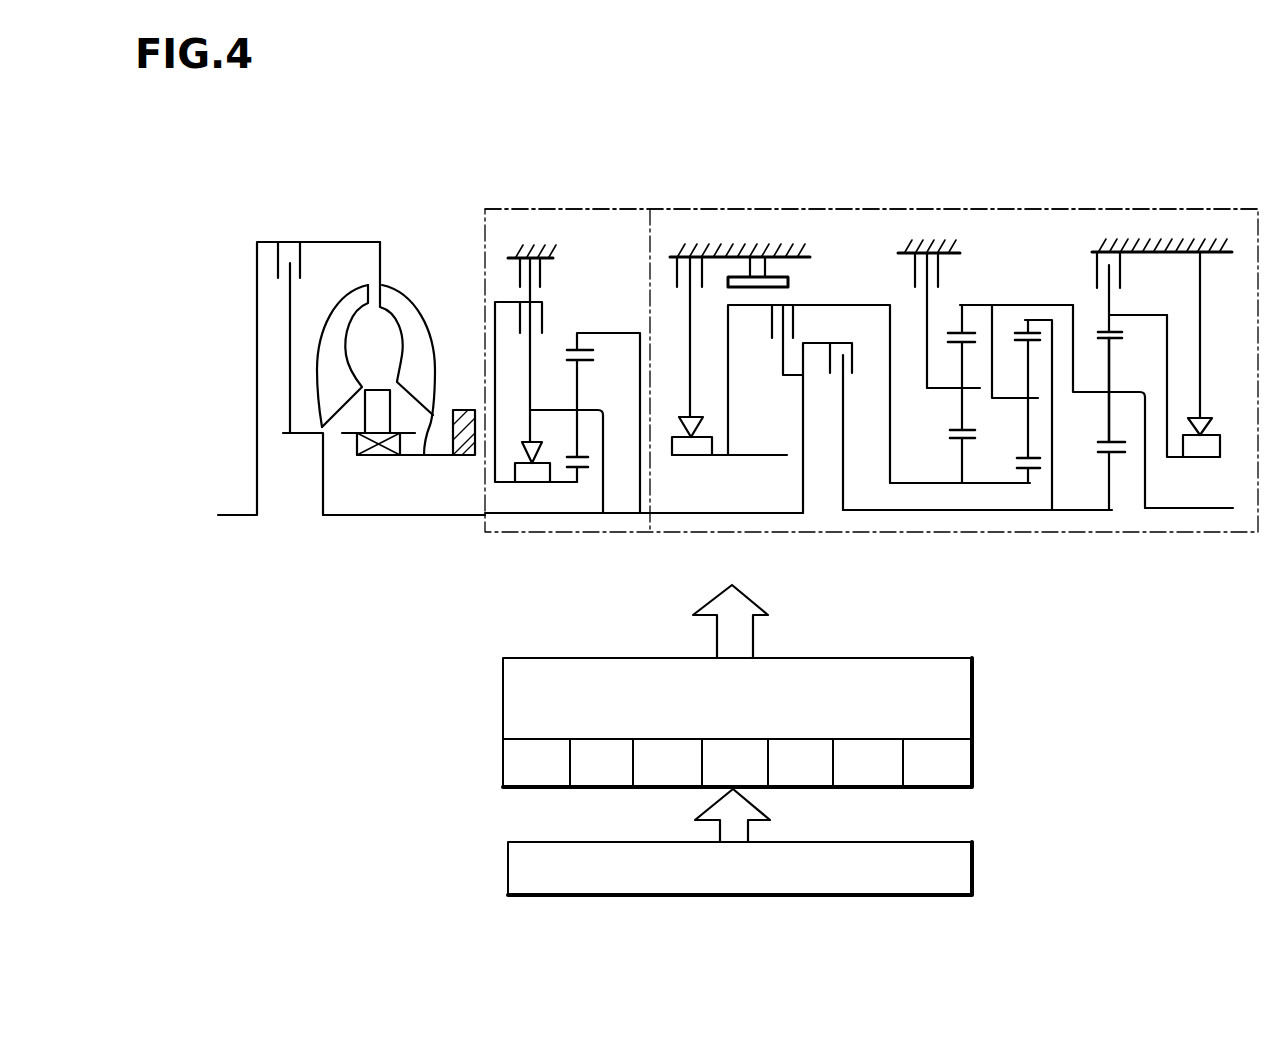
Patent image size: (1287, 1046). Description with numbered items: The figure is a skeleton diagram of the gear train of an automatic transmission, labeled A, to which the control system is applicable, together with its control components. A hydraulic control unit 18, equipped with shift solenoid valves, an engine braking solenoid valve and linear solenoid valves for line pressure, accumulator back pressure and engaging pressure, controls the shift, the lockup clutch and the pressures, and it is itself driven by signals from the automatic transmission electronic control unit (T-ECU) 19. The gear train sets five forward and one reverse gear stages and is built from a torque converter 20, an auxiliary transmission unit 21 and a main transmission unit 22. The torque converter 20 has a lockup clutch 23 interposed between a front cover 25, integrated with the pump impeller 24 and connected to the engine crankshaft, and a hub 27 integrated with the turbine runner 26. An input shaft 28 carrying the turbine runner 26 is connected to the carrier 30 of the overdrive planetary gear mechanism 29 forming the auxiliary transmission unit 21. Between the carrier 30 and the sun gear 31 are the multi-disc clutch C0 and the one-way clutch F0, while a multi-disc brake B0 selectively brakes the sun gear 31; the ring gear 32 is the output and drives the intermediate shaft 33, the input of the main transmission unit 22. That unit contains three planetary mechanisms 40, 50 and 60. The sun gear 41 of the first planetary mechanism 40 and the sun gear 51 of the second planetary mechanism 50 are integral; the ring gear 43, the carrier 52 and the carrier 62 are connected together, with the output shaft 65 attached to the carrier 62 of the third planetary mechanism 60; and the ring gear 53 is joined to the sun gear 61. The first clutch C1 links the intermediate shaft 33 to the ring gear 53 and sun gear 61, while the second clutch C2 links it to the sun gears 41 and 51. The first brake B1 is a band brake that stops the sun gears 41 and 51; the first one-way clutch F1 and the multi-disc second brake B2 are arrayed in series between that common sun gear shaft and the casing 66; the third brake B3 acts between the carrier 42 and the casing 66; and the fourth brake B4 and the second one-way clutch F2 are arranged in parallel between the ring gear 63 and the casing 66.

The hydraulic control unit 18 is at (972, 682).
The automatic transmission electronic control unit (T-ECU) 19 is at (972, 876).
The torque converter 20 is at (396, 327).
The auxiliary transmission unit 21 is at (637, 537).
The main transmission unit 22 is at (988, 209).
The lockup clutch 23 is at (278, 255).
The pump impeller 24 is at (427, 422).
The front cover 25 is at (257, 332).
The turbine runner 26 is at (352, 287).
The member (hub) 27 is at (300, 435).
The input shaft 28 is at (362, 515).
The overdrive planetary gear mechanism 29 is at (538, 390).
The carrier 30 is at (585, 408).
The sun gear 31 is at (594, 485).
The ring gear 32 is at (577, 346).
The intermediate shaft 33 is at (747, 513).
The first planetary mechanism 40 is at (981, 431).
The sun gear 41 is at (952, 447).
The carrier 42 is at (934, 390).
The ring gear 43 is at (965, 330).
The second planetary mechanism 50 is at (1012, 423).
The sun gear 51 is at (1032, 490).
The carrier 52 is at (1007, 399).
The ring gear 53 is at (1025, 332).
The third planetary mechanism 60 is at (1114, 435).
The sun gear 61 is at (1125, 497).
The carrier 62 is at (1137, 392).
The ring gear 63 is at (1104, 330).
The output shaft 65 is at (1212, 509).
The casing 66 is at (725, 250).
The automatic transmission A is at (836, 204).
The multi-disc brake B0 is at (518, 270).
The first brake B1 is at (775, 262).
The second brake B2 is at (673, 268).
The third brake B3 is at (915, 276).
The fourth brake B4 is at (1115, 250).
The multi-disc clutch C0 is at (497, 310).
The first clutch C1 is at (852, 358).
The second clutch C2 is at (772, 320).
The one-way clutch F0 is at (530, 482).
The first one-way clutch F1 is at (693, 455).
The second one-way clutch F2 is at (1210, 440).